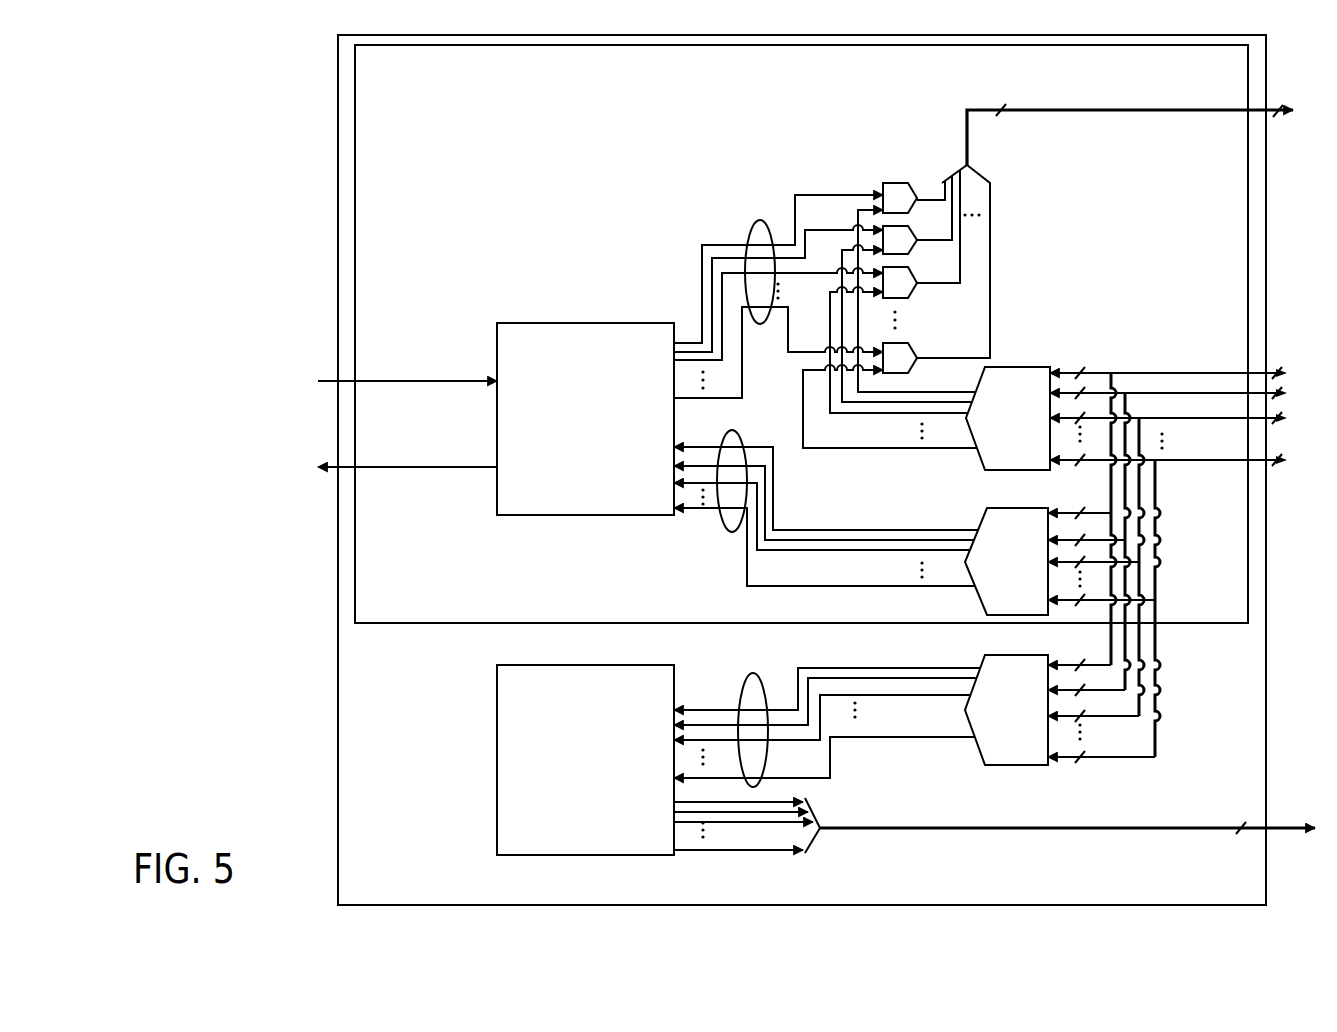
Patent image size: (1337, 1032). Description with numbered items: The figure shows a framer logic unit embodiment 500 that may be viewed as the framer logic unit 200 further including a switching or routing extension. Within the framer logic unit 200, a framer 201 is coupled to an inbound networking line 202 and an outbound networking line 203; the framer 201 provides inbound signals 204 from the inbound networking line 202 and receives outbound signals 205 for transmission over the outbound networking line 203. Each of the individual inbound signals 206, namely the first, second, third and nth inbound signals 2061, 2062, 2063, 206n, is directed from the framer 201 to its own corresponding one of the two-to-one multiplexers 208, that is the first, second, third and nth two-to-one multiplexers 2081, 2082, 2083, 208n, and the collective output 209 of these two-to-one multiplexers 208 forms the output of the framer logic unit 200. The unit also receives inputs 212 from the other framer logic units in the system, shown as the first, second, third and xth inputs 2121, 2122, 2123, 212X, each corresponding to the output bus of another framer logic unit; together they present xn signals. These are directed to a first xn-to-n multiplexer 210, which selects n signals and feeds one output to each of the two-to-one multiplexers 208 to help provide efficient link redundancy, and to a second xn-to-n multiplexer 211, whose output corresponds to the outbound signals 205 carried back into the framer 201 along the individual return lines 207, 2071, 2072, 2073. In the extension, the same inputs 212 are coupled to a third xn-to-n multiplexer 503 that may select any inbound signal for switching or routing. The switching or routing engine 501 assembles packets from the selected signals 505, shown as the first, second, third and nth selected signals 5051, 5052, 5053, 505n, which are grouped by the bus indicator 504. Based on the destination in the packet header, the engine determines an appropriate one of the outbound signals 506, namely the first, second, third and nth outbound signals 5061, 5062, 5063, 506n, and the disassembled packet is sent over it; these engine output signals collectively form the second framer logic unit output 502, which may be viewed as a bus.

The framer logic unit 200 is at (426, 89).
The framer 201 is at (569, 454).
The inbound networking line 202 is at (370, 379).
The outbound networking line 203 is at (370, 465).
The inbound signals 204 is at (752, 221).
The outbound signals 205 is at (731, 532).
The inbound signals 206 is at (778, 276).
The first inbound signal 2061 is at (812, 193).
The second inbound signal 2062 is at (830, 218).
The third inbound signal 2063 is at (825, 277).
The nth inbound signal 206n is at (800, 353).
The framer input lines 207 is at (826, 534).
The framer input line 1 2071 is at (804, 528).
The framer input line 2 2072 is at (893, 539).
The framer input line 3 2073 is at (908, 586).
The 2:1 multiplexers 208 is at (920, 259).
The first 2:1 multiplexer 2081 is at (918, 167).
The second 2:1 multiplexer 2082 is at (911, 237).
The third 2:1 multiplexer 2083 is at (909, 281).
The nth 2:1 multiplexer 208n is at (908, 350).
The collective output 209 is at (1080, 110).
The first (xn):n multiplexer 210 is at (1022, 367).
The second (xn):n multiplexer 211 is at (1020, 508).
The inputs 212 is at (1172, 521).
The first input 2121 is at (1128, 370).
The second input 2122 is at (1147, 393).
The third input 2123 is at (1185, 418).
The xth input 212X is at (1218, 462).
The framer logic unit embodiment 500 is at (425, 886).
The switching or routing engine 501 is at (569, 809).
The second framer logic unit output 502 is at (893, 827).
The third (xn):n multiplexer 503 is at (1017, 765).
The engine input bus 504 is at (757, 673).
The selected signals 505 is at (827, 704).
The first selected signal 5051 is at (832, 668).
The second selected signal 5052 is at (877, 678).
The third selected signal 5053 is at (930, 695).
The nth selected signal 505n is at (908, 737).
The outbound signals 506 is at (774, 816).
The first outbound signal 5061 is at (768, 802).
The second outbound signal 5062 is at (745, 813).
The third outbound signal 5063 is at (768, 825).
The nth outbound signal 506n is at (745, 853).